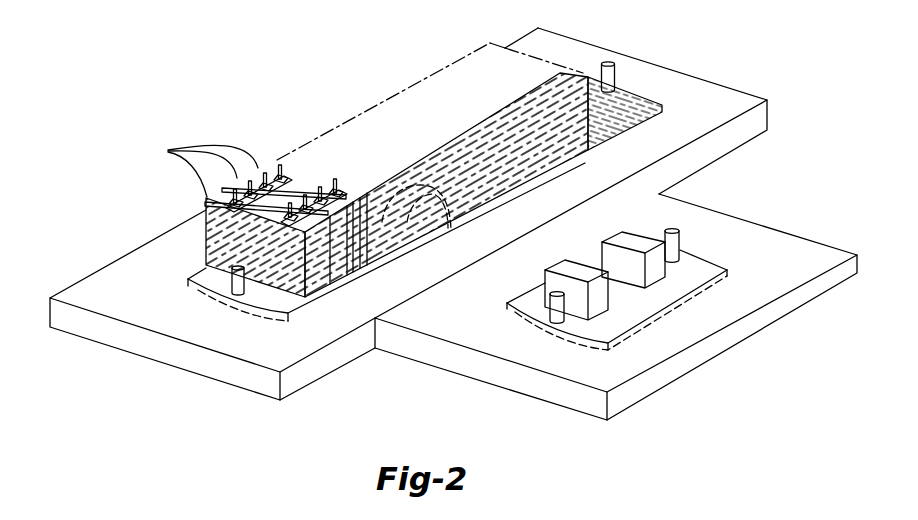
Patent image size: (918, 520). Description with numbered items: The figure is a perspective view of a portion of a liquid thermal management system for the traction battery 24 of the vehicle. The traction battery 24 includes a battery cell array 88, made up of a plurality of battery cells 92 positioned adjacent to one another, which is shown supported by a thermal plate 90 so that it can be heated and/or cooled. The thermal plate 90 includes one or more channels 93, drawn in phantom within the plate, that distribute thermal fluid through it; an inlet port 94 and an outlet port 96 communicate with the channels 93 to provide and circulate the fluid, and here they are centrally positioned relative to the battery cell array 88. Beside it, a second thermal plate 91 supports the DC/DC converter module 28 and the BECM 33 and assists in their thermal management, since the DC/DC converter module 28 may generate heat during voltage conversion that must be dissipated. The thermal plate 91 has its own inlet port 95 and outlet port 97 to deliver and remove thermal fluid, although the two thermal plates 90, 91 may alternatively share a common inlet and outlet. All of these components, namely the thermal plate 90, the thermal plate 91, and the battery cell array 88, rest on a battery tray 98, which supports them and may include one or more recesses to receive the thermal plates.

The traction battery 24 is at (326, 100).
The DC/DC converter module 28 is at (565, 268).
The BECM 33 is at (622, 235).
The battery cell array 88 is at (430, 70).
The thermal plate 90 is at (289, 300).
The thermal plate 91 is at (636, 304).
The battery cells 92 is at (202, 167).
The channels 93 is at (452, 232).
The inlet port 94 is at (616, 76).
The inlet port 95 is at (673, 231).
The outlet port 96 is at (247, 285).
The outlet port 97 is at (553, 303).
The battery tray 98 is at (707, 98).